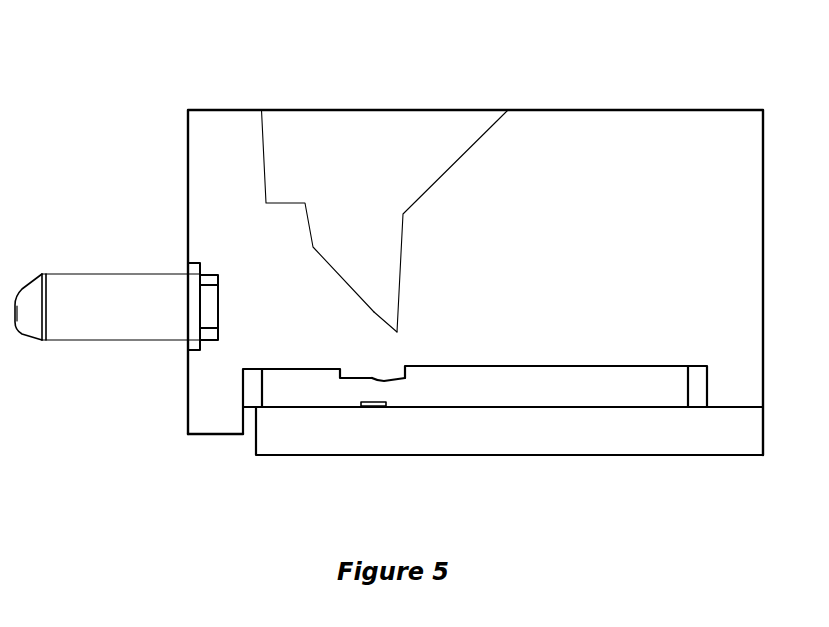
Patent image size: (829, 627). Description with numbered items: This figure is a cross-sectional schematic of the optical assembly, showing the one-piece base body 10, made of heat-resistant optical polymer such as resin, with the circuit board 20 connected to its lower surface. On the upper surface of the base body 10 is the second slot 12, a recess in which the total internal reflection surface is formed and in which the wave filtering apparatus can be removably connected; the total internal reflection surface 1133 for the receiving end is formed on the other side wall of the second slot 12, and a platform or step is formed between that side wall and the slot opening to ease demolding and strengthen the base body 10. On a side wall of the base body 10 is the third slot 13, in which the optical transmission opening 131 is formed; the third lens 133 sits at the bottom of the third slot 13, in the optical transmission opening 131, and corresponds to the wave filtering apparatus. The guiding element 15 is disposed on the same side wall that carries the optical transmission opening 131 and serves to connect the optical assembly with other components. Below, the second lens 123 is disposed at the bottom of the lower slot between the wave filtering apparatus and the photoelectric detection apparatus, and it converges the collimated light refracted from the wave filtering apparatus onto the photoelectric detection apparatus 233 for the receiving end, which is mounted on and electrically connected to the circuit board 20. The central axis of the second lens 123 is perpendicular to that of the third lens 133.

The base body 10 is at (620, 136).
The second slot 12 is at (310, 118).
The third slot 13 is at (207, 293).
The optical transmission opening 131 is at (205, 312).
The third lens 133 is at (217, 308).
The guiding element 15 is at (67, 333).
The circuit board 20 is at (718, 432).
The second lens 123 is at (370, 381).
The photoelectric detection apparatus for the receiving end 233 is at (372, 407).
The total internal reflection surface for the receiving end 1133 is at (374, 312).